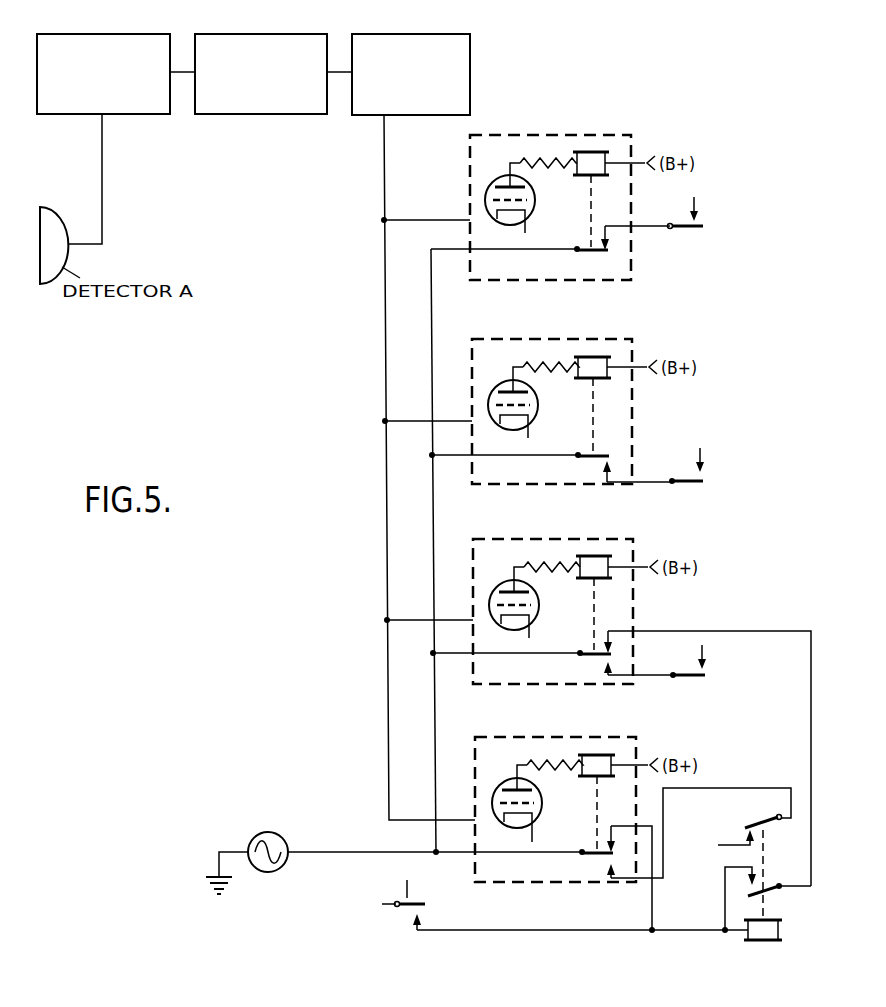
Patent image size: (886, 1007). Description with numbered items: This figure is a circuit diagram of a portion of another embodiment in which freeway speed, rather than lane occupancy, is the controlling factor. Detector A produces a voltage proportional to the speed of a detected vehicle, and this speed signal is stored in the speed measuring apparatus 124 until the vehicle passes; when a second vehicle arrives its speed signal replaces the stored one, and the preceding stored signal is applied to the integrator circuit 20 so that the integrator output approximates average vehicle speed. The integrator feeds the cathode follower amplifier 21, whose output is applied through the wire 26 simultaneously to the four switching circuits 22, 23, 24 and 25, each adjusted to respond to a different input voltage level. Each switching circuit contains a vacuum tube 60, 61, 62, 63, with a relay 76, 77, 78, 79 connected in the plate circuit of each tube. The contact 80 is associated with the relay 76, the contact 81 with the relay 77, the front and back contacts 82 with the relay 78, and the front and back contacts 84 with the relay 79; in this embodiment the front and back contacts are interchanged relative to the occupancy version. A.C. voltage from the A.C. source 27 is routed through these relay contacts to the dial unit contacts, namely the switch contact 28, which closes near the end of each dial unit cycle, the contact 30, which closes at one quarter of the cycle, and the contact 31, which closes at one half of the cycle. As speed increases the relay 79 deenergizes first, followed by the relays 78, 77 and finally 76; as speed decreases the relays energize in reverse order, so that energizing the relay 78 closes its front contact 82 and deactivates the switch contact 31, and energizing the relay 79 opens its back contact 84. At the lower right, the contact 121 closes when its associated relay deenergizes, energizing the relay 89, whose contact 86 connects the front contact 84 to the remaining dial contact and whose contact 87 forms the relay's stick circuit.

The speed measuring apparatus 124 is at (93, 33).
The integrator circuit 20 is at (252, 33).
The cathode follower amplifier 21 is at (395, 33).
The wire 26 is at (384, 161).
The switching circuit 22 is at (470, 143).
The switching circuit 23 is at (470, 360).
The switching circuit 24 is at (473, 565).
The switching circuit 25 is at (475, 765).
The vacuum tube 60 is at (534, 211).
The vacuum tube 61 is at (536, 393).
The vacuum tube 62 is at (537, 613).
The vacuum tube 63 is at (542, 809).
The relay 76 is at (597, 176).
The relay 77 is at (598, 379).
The relay 78 is at (597, 579).
The relay 79 is at (600, 777).
The contact 80 is at (592, 247).
The contact 81 is at (590, 452).
The front contact 82 is at (595, 650).
The back contact 84 is at (597, 850).
The switch contact 28 is at (688, 228).
The contact 30 is at (695, 481).
The contact 31 is at (692, 677).
The A.C. source 27 is at (282, 835).
The contact 121 is at (409, 904).
The contact 86 is at (765, 829).
The contact 87 is at (770, 893).
The relay 89 is at (780, 930).